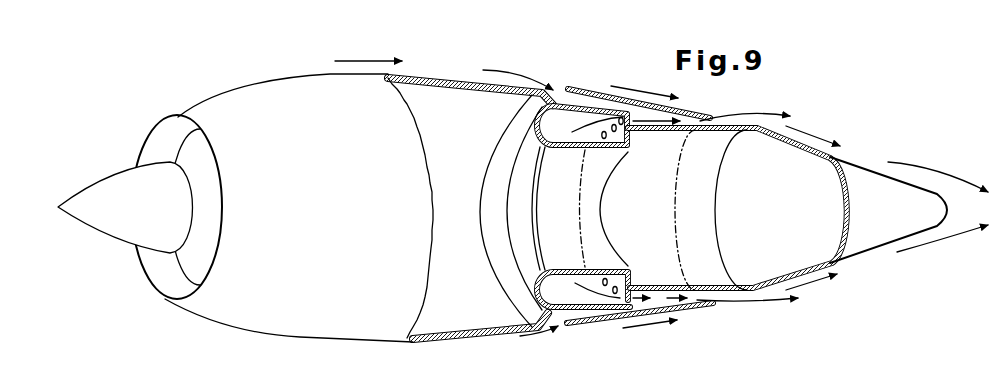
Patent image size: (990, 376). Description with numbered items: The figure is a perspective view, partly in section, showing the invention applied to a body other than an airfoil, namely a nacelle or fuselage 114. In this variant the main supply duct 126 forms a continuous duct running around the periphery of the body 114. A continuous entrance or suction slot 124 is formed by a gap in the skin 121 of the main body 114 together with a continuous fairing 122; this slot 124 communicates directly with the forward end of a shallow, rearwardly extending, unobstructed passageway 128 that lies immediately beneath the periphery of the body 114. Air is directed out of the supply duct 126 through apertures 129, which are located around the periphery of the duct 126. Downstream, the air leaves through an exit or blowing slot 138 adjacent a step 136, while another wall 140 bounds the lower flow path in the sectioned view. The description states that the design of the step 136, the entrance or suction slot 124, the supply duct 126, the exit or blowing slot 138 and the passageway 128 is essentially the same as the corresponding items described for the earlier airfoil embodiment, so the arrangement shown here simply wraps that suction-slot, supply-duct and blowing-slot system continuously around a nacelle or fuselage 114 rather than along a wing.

The nacelle or fuselage 114 is at (256, 93).
The skin 121 is at (437, 75).
The continuous fairing 122 is at (708, 120).
The entrance or suction slot 124 is at (557, 98).
The main supply duct 126 is at (552, 122).
The passageway 128 is at (605, 97).
The apertures 129 is at (640, 132).
The step 136 is at (636, 303).
The exit or blowing slot 138 is at (711, 131).
The lower duct wall 140 is at (597, 313).